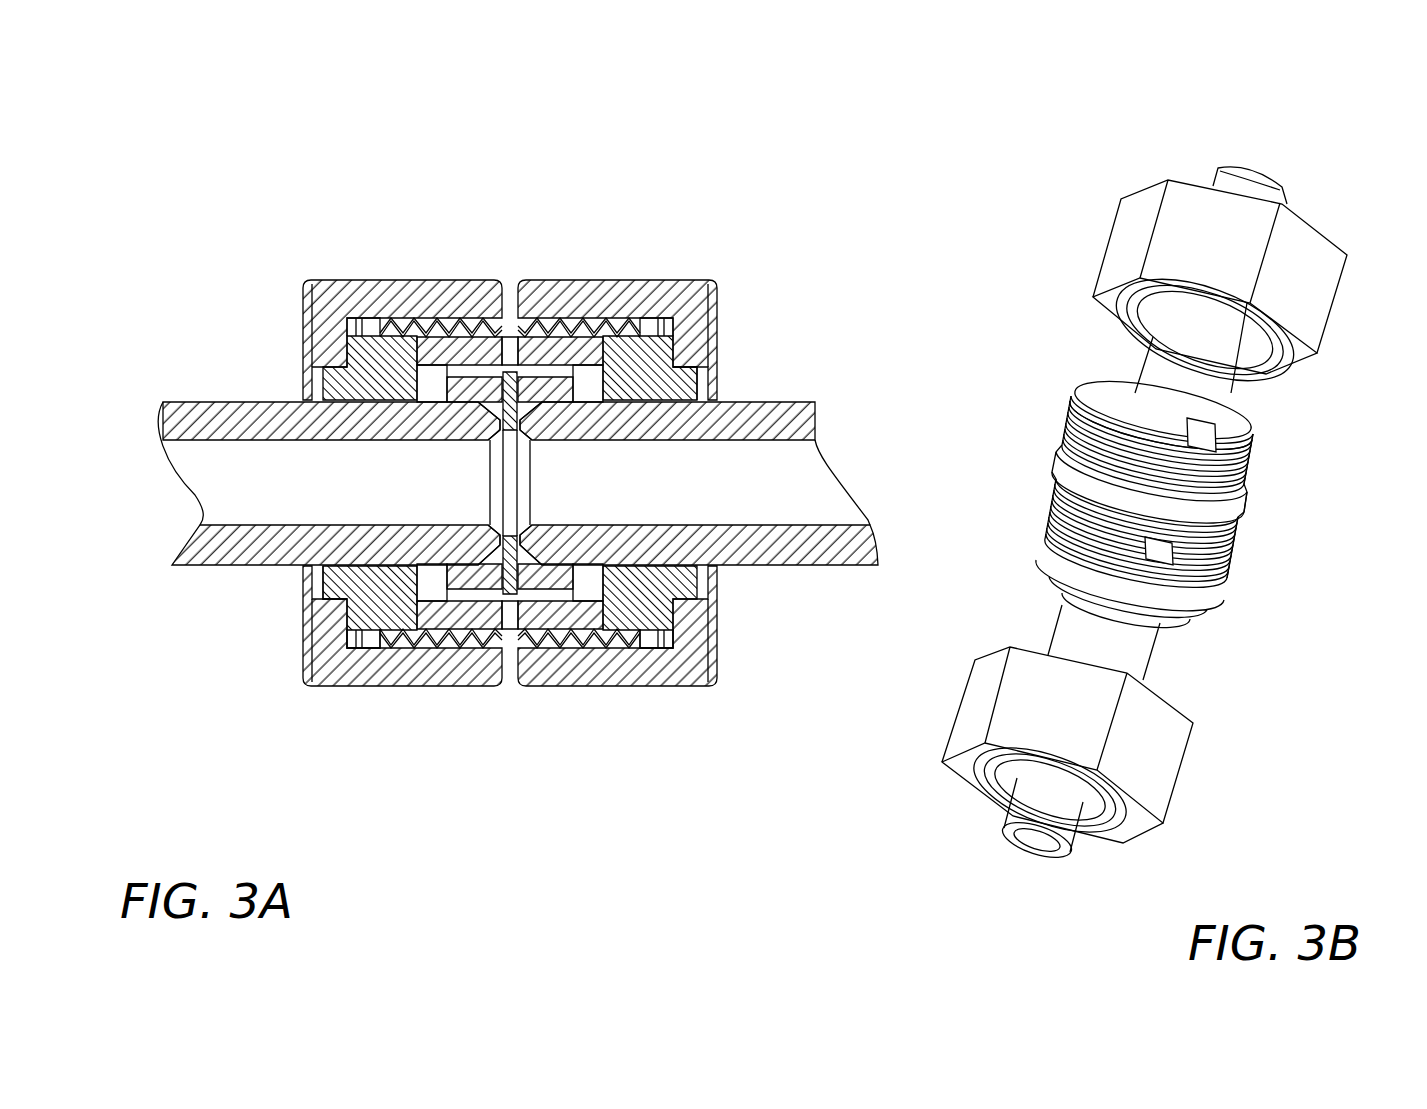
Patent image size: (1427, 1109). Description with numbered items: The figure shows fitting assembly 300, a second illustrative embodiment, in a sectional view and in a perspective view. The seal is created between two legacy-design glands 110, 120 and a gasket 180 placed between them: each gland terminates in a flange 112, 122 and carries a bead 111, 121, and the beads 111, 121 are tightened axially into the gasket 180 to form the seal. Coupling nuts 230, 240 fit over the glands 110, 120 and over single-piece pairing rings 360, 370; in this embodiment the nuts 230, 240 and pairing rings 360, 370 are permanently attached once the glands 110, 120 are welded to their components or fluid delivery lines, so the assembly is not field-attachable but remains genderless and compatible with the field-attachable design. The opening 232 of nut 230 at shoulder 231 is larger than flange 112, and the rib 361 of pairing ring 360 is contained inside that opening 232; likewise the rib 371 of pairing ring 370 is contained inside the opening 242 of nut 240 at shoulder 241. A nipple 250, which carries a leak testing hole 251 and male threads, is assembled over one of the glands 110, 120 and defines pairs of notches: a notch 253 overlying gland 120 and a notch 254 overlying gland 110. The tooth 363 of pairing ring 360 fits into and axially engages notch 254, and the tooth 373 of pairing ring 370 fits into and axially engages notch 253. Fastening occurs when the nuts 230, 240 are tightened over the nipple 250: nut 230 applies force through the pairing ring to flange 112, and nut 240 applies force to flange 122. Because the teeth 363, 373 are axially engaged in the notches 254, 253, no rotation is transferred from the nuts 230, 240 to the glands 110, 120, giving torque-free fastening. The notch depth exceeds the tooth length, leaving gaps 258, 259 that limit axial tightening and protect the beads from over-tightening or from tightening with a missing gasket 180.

In FIG. 3A, the gland 110 is at (197, 413).
In FIG. 3B, the gland 110 is at (1028, 837).
In FIG. 3A, the bead 111 is at (513, 560).
In FIG. 3A, the flange 112 is at (420, 387).
In FIG. 3A, the gland 120 is at (788, 425).
In FIG. 3B, the gland 120 is at (1255, 163).
In FIG. 3A, the bead 121 is at (540, 562).
In FIG. 3A, the flange 122 is at (603, 387).
In FIG. 3A, the gasket 180 is at (512, 383).
In FIG. 3A, the coupling nut 230 is at (368, 293).
In FIG. 3B, the coupling nut 230 is at (1157, 753).
In FIG. 3A, the shoulder 231 is at (340, 348).
In FIG. 3A, the opening 232 is at (312, 587).
In FIG. 3A, the coupling nut 240 is at (642, 293).
In FIG. 3B, the coupling nut 240 is at (1128, 250).
In FIG. 3A, the shoulder 241 is at (683, 612).
In FIG. 3A, the opening 242 is at (707, 587).
In FIG. 3A, the nipple 250 is at (563, 625).
In FIG. 3B, the nipple 250 is at (1048, 510).
In FIG. 3A, the leak testing hole 251 is at (508, 610).
In FIG. 3B, the leak testing hole 251 is at (1180, 497).
In FIG. 3B, the notch 253 is at (1235, 458).
In FIG. 3B, the notch 254 is at (1158, 562).
In FIG. 3B, the gap 258 is at (1188, 446).
In FIG. 3B, the gap 259 is at (1162, 516).
In FIG. 3A, the fitting assembly 300 is at (510, 469).
In FIG. 3B, the fitting assembly 300 is at (1139, 476).
In FIG. 3A, the pairing ring 360 is at (380, 612).
In FIG. 3B, the pairing ring 360 is at (1187, 620).
In FIG. 3A, the rib 361 is at (340, 585).
In FIG. 3B, the tooth 363 is at (1173, 569).
In FIG. 3A, the pairing ring 370 is at (643, 610).
In FIG. 3B, the pairing ring 370 is at (1247, 442).
In FIG. 3A, the rib 371 is at (682, 380).
In FIG. 3B, the tooth 373 is at (1197, 430).